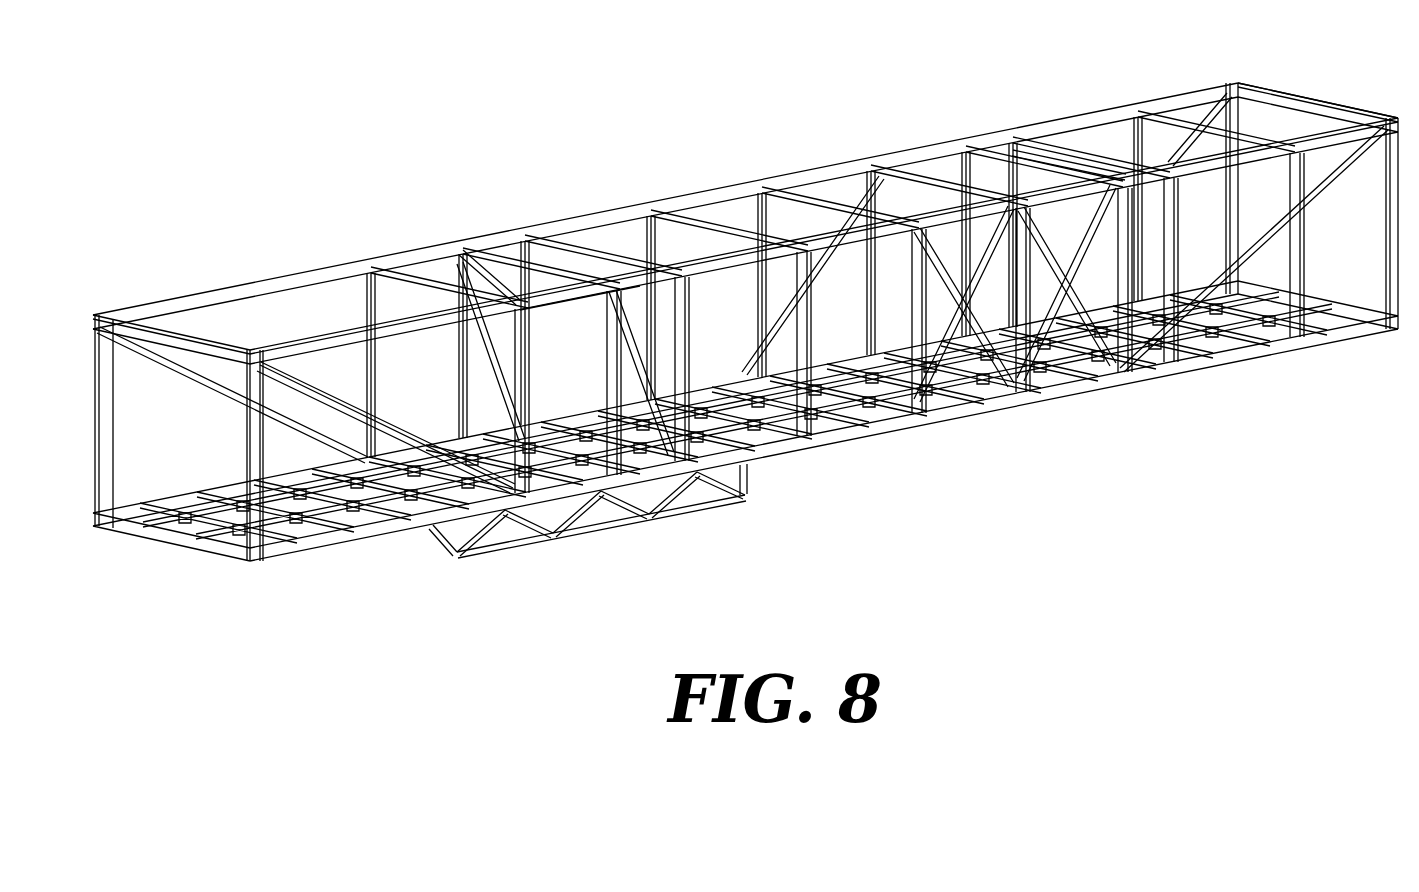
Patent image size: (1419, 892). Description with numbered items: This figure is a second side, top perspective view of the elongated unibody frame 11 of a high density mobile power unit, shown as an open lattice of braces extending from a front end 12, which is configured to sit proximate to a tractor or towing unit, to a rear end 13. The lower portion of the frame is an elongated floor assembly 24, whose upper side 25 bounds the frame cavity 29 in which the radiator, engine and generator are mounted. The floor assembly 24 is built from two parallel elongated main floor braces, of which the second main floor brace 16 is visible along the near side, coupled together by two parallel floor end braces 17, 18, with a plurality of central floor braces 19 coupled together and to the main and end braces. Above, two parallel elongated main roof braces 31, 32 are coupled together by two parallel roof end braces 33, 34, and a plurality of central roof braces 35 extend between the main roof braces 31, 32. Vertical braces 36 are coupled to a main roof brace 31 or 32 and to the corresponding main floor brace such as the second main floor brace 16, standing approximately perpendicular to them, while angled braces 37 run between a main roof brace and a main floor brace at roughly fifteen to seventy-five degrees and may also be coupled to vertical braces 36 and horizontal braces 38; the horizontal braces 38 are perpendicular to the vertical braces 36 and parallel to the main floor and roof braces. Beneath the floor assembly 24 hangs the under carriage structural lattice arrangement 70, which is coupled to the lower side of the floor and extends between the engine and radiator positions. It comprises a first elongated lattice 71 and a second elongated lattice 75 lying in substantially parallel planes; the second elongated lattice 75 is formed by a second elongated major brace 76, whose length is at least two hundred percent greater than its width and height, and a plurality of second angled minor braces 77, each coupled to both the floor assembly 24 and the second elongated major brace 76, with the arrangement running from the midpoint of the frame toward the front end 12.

The unibody frame 11 is at (741, 142).
The front end 12 is at (134, 566).
The rear end 13 is at (1334, 84).
The second main floor brace 16 is at (967, 420).
The floor end brace 17 is at (215, 555).
The floor end brace 18 is at (1355, 310).
The central floor braces 19 is at (1080, 400).
The floor assembly 24 is at (255, 556).
The upper side 25 is at (480, 445).
The frame cavity 29 is at (396, 304).
The first main roof brace 31 is at (553, 232).
The second main roof brace 32 is at (573, 292).
The roof end brace 33 is at (190, 345).
The roof end brace 34 is at (1285, 100).
The central roof braces 35 is at (418, 260).
The vertical braces 36 is at (1388, 165).
The angled braces 37 is at (187, 390).
The horizontal braces 38 is at (832, 275).
The under carriage structural lattice arrangement 70 is at (579, 542).
The first elongated lattice 71 is at (400, 540).
The second elongated lattice 75 is at (457, 555).
The second elongated major brace 76 is at (627, 515).
The second angled minor braces 77 is at (510, 530).